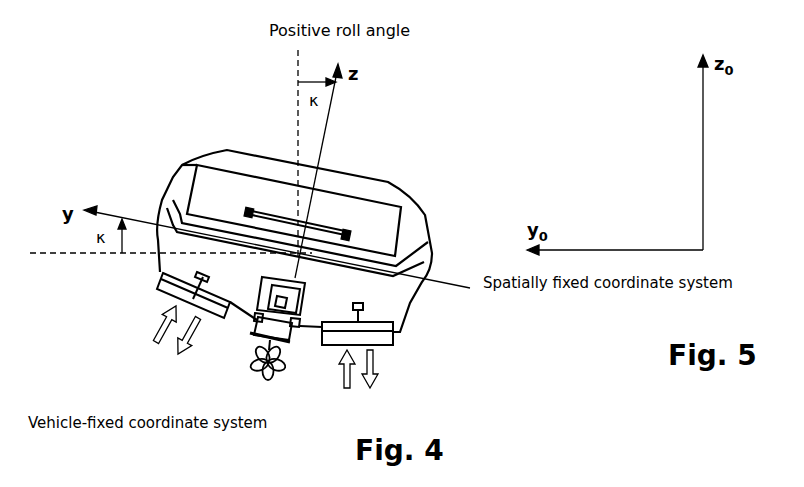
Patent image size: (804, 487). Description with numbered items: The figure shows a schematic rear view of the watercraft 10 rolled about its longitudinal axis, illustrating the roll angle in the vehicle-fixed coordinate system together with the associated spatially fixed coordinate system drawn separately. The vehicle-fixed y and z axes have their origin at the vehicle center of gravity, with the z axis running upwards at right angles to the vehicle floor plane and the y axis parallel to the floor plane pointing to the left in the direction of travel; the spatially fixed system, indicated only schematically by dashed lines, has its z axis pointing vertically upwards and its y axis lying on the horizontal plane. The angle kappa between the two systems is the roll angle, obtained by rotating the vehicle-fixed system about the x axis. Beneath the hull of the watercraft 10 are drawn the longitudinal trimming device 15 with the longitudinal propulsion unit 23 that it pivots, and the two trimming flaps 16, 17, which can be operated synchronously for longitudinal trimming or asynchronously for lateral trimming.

The watercraft 10 is at (180, 185).
The longitudinal trimming device 15 is at (257, 325).
The trimming flap 16 is at (162, 283).
The trimming flap 17 is at (392, 334).
The longitudinal propulsion unit 23 is at (266, 376).